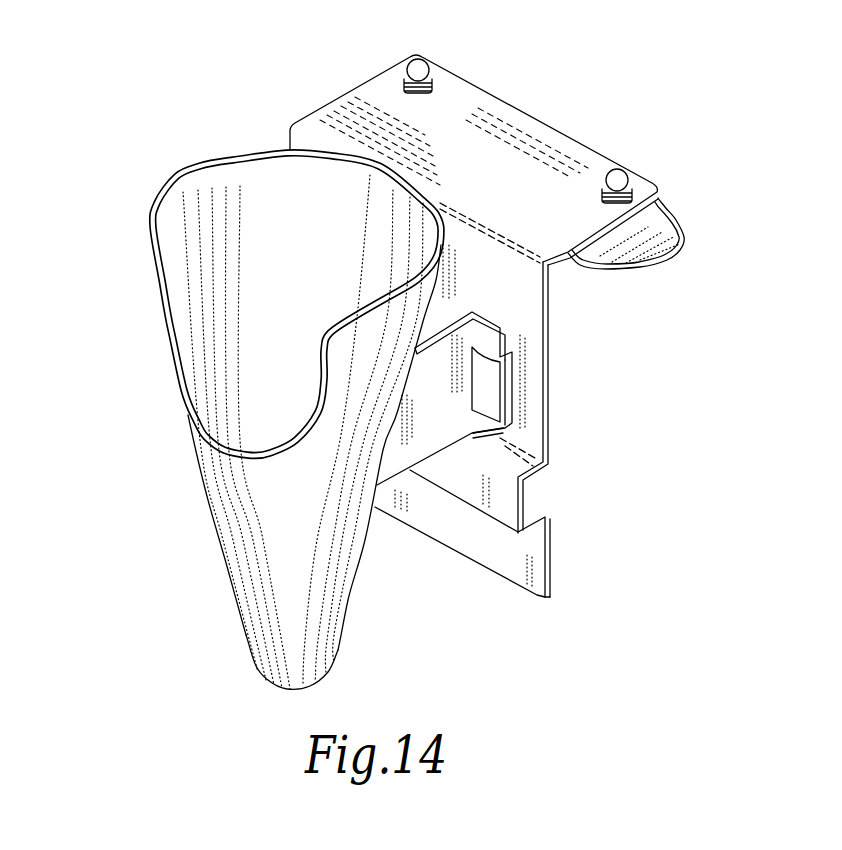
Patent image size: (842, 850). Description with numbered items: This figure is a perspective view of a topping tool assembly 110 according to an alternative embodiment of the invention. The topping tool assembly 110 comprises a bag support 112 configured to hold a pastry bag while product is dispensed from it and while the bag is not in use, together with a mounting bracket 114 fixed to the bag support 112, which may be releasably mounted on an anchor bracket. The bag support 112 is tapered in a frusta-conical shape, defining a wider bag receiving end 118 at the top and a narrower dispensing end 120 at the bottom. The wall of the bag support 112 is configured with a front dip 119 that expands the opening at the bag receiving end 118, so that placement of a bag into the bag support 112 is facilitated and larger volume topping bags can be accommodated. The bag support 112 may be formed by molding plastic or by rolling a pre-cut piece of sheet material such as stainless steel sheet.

The topping tool assembly 110 is at (232, 61).
The bag support 112 is at (213, 525).
The mounting bracket 114 is at (428, 422).
The bag receiving end 118 is at (243, 197).
The front dip 119 is at (261, 450).
The dispensing end 120 is at (287, 689).